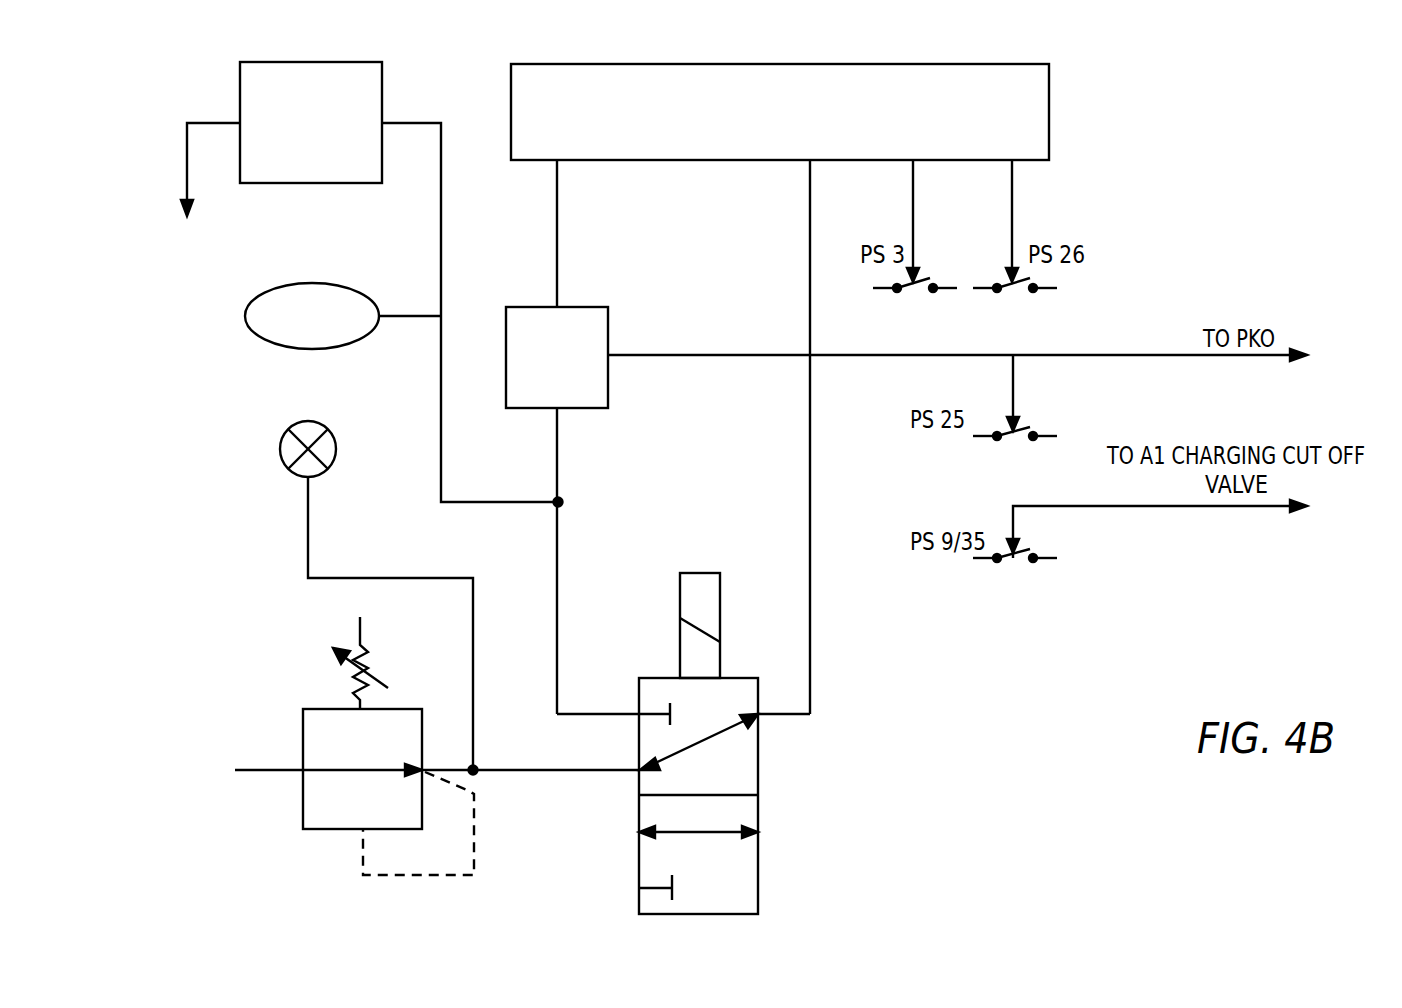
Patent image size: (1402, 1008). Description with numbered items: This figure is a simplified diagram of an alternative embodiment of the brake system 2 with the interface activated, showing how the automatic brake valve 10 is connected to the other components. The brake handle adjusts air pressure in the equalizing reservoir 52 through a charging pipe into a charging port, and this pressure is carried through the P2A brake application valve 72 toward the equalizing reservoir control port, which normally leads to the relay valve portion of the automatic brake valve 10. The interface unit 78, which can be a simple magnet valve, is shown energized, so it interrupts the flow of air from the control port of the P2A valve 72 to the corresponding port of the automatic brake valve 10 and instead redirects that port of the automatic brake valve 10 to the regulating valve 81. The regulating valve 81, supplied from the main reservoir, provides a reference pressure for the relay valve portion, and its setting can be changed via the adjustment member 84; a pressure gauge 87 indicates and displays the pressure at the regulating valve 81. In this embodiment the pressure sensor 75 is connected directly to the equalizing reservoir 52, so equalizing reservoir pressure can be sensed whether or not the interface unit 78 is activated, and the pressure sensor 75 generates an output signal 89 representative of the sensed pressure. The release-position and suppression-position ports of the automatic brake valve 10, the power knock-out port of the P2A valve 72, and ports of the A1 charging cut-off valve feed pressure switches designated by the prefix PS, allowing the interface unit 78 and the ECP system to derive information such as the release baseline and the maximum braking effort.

The brake system 2 is at (1202, 213).
The automatic brake valve 10 is at (1066, 106).
The equalizing reservoir 52 is at (315, 349).
The P2A brake application valve 72 is at (592, 389).
The pressure sensor 75 is at (310, 183).
The interface unit 78 is at (760, 770).
The regulating valve 81 is at (323, 830).
The adjustment member 84 is at (350, 688).
The pressure gauge 87 is at (320, 477).
The output signal 89 is at (186, 172).